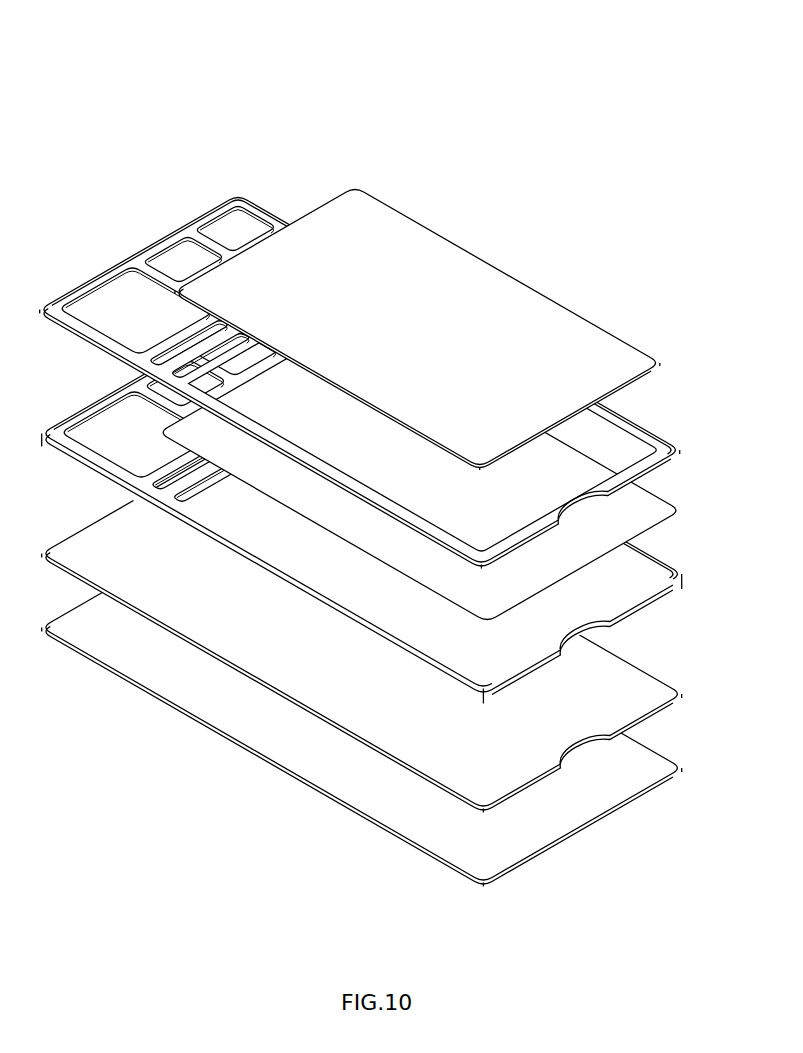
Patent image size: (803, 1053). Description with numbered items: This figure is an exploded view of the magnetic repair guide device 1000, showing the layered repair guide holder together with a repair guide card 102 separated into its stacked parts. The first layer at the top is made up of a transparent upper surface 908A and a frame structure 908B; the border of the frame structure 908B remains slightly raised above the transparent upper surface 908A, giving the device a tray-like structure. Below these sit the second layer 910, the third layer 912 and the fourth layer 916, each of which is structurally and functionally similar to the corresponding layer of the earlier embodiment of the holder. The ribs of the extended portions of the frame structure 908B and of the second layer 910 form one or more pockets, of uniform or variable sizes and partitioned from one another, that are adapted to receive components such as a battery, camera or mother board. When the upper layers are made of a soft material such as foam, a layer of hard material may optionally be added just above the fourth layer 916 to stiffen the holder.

The magnetic repair guide device 1000 is at (386, 451).
The transparent upper surface 908A is at (623, 343).
The frame structure 908B is at (640, 428).
The electronic component 102 is at (662, 513).
The second layer 910 is at (673, 572).
The third layer 912 is at (663, 692).
The fourth layer 916 is at (663, 768).